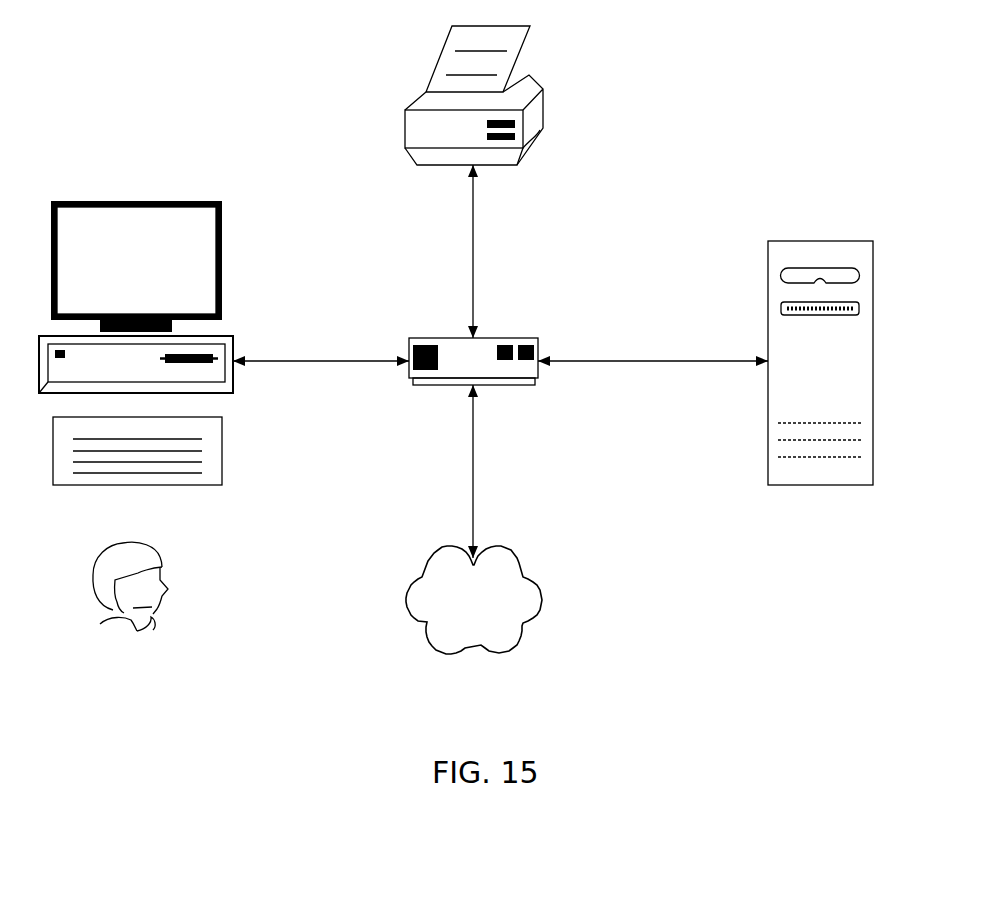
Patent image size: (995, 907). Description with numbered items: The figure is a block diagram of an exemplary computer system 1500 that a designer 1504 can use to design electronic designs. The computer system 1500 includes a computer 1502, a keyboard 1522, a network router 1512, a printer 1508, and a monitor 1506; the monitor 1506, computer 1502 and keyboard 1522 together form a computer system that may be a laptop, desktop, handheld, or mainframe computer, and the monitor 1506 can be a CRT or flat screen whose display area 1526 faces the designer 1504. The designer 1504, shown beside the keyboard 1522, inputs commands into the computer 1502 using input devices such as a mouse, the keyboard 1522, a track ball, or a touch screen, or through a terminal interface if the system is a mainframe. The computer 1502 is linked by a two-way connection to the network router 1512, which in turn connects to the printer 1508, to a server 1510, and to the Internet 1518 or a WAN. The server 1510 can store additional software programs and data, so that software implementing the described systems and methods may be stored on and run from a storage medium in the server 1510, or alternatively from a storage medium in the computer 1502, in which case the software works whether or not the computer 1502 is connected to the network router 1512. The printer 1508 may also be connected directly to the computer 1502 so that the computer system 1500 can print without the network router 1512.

The computer system 1500 is at (748, 105).
The computer 1502 is at (233, 338).
The designer 1504 is at (153, 552).
The monitor 1506 is at (222, 201).
The printer 1508 is at (405, 140).
The server 1510 is at (768, 465).
The network router 1512 is at (505, 338).
The Internet 1518 is at (508, 553).
The keyboard 1522 is at (222, 448).
The screen 1526 is at (229, 256).